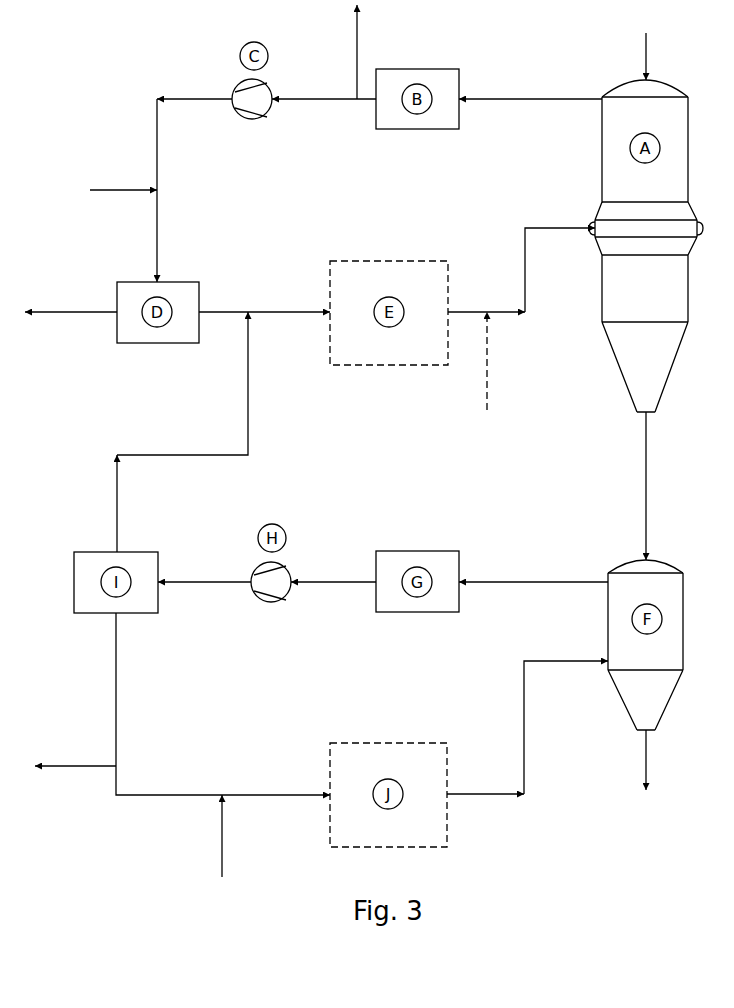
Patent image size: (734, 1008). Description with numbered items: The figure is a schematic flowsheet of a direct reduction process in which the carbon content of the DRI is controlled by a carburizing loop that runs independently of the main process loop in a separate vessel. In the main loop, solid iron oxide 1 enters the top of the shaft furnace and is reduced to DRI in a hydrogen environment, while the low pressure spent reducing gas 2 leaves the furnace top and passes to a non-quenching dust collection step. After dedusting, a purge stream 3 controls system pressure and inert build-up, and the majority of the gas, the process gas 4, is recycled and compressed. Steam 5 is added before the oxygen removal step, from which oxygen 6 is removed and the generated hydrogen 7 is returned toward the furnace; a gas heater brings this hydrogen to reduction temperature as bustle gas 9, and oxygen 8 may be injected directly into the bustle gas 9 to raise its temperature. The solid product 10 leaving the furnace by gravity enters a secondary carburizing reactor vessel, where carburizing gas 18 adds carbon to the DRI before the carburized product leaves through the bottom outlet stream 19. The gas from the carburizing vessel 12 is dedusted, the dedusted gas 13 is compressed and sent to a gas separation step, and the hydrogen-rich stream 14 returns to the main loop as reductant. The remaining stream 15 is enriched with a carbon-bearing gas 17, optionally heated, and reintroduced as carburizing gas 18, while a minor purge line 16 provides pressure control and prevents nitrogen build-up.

The solid iron oxide 1 is at (646, 55).
The spent reducing gas 2 is at (540, 100).
The purge stream 3 is at (357, 40).
The process gas 4 is at (326, 99).
The steam 5 is at (112, 190).
The oxygen 6 is at (78, 312).
The hydrogen 7 is at (280, 312).
The oxygen 8 is at (487, 370).
The bustle gas 9 is at (525, 275).
The solid product 10 is at (646, 473).
The gas from the carburizing vessel 12 is at (537, 583).
The dedusted gas 13 is at (353, 582).
The hydrogen-rich stream 14 is at (117, 500).
The remaining stream 15 is at (116, 697).
The minor purge line 16 is at (80, 766).
The carbon-bearing gas 17 is at (222, 850).
The carburizing gas 18 is at (524, 728).
The product stream from vessel F 19 is at (646, 762).